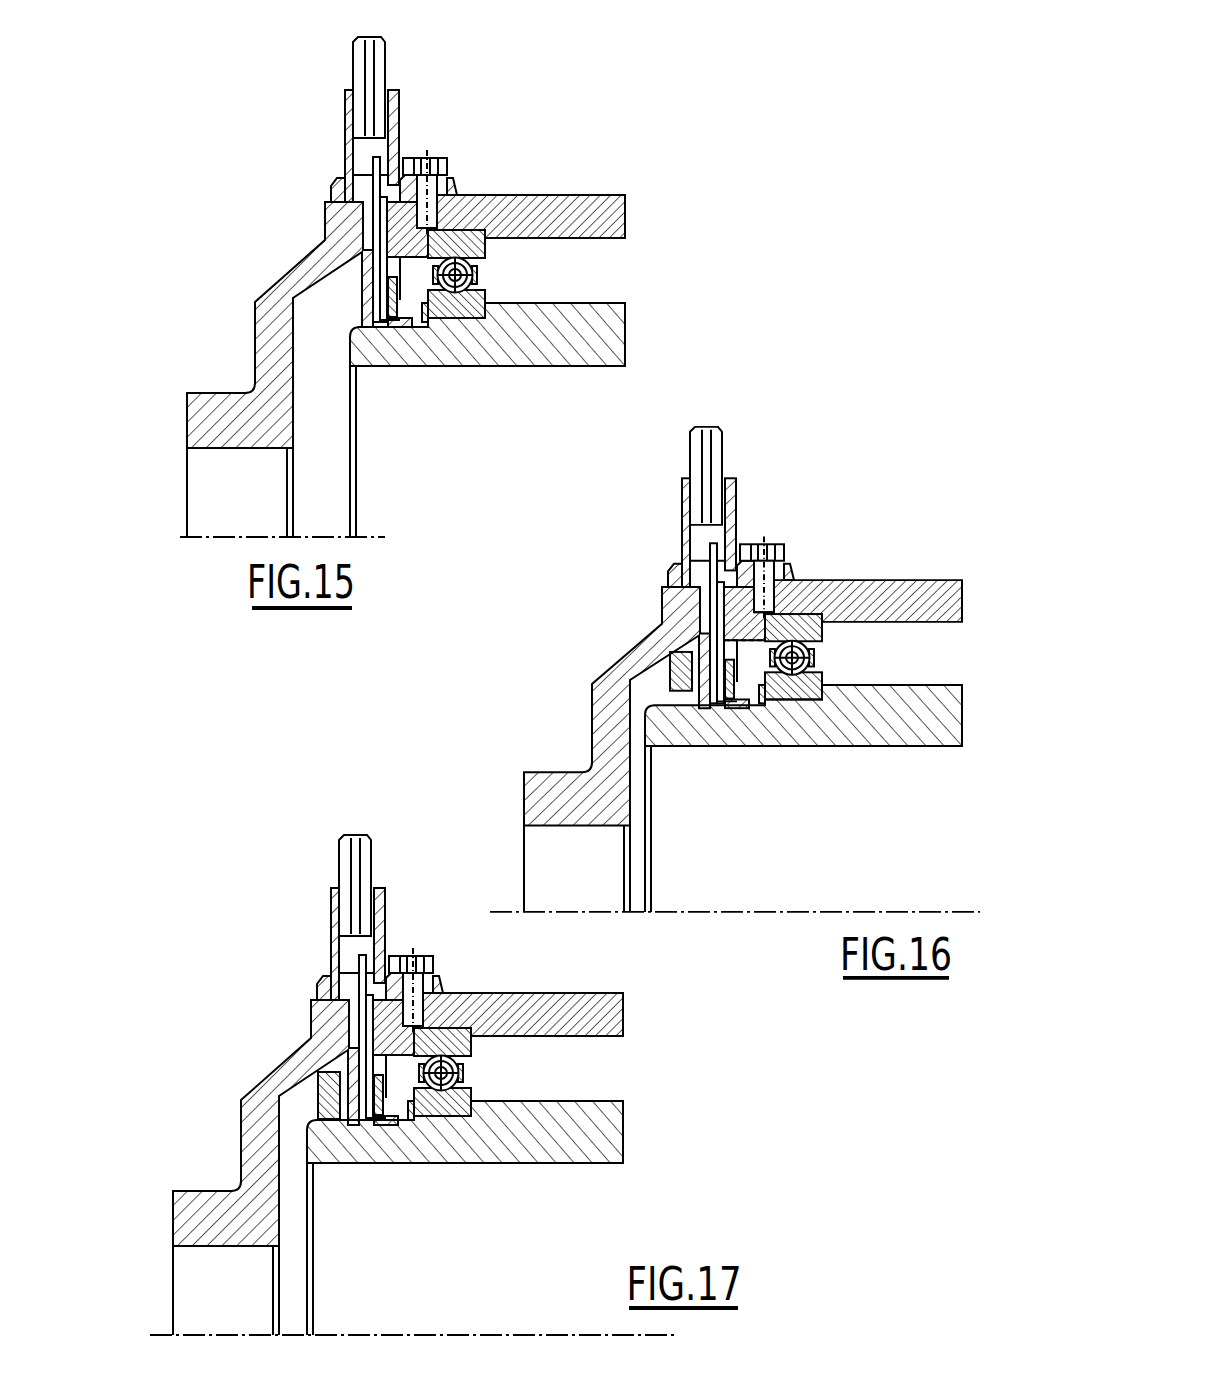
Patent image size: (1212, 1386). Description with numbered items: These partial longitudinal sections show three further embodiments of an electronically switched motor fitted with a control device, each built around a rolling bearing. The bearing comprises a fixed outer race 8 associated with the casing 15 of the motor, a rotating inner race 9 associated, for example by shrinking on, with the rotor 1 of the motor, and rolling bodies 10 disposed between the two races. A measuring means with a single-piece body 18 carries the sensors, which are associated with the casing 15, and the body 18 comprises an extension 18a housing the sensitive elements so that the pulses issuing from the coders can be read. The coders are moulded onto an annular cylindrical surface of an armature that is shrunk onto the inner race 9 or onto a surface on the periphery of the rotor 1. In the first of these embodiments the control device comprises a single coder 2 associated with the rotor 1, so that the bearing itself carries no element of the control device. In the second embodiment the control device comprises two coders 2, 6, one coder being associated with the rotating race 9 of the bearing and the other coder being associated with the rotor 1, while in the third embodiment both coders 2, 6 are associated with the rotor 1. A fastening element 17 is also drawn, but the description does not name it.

In FIG. 15, the rotor 1 is at (578, 340).
In FIG. 16, the rotor 1 is at (803, 798).
In FIG. 17, the rotor 1 is at (465, 1218).
In FIG. 15, the coder 2 is at (397, 330).
In FIG. 16, the coder 2 is at (729, 669).
In FIG. 17, the coder 2 is at (372, 1085).
In FIG. 16, the coder 6 is at (684, 724).
In FIG. 17, the coder 6 is at (332, 1144).
In FIG. 15, the fixed outer race 8 is at (472, 248).
In FIG. 16, the fixed outer race 8 is at (819, 640).
In FIG. 17, the fixed outer race 8 is at (479, 1052).
In FIG. 15, the rotating inner race 9 is at (467, 307).
In FIG. 16, the rotating inner race 9 is at (793, 733).
In FIG. 17, the rotating inner race 9 is at (445, 1152).
In FIG. 15, the rolling bodies 10 is at (487, 275).
In FIG. 16, the rolling bodies 10 is at (847, 649).
In FIG. 17, the rolling bodies 10 is at (496, 1077).
In FIG. 15, the casing 15 is at (568, 205).
In FIG. 16, the casing 15 is at (843, 574).
In FIG. 17, the casing 15 is at (498, 999).
In FIG. 15, the bolt 17 is at (437, 163).
In FIG. 16, the bolt 17 is at (795, 556).
In FIG. 17, the bolt 17 is at (448, 984).
In FIG. 15, the body 18 is at (331, 190).
In FIG. 16, the body 18 is at (671, 507).
In FIG. 17, the body 18 is at (323, 917).
In FIG. 15, the extension 18a is at (333, 227).
In FIG. 16, the extension 18a is at (617, 749).
In FIG. 17, the extension 18a is at (266, 1163).